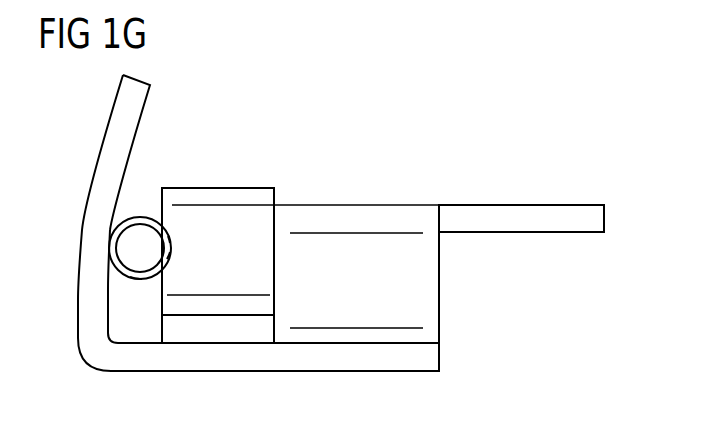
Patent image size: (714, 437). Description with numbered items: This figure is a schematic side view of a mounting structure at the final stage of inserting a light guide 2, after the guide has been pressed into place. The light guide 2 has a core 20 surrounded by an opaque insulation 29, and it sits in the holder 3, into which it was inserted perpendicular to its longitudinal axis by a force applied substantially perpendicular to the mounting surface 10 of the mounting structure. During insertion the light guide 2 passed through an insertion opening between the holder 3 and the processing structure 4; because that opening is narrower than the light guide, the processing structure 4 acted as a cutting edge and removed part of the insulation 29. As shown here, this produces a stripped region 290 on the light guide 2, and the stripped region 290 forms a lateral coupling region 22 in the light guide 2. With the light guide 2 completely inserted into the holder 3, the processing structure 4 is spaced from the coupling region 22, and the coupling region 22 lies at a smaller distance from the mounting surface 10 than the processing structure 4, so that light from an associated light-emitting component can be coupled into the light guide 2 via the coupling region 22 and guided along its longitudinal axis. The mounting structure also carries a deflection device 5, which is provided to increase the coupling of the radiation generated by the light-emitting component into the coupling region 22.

The mounting surface 10 is at (402, 372).
The holder 3 is at (118, 115).
The deflection device 5 is at (542, 212).
The processing structure 4 is at (168, 193).
The light guide 2 is at (125, 218).
The core 20 is at (143, 237).
The coupling region 22 is at (168, 240).
The stripped region 290 is at (168, 255).
The insulation 29 is at (136, 280).